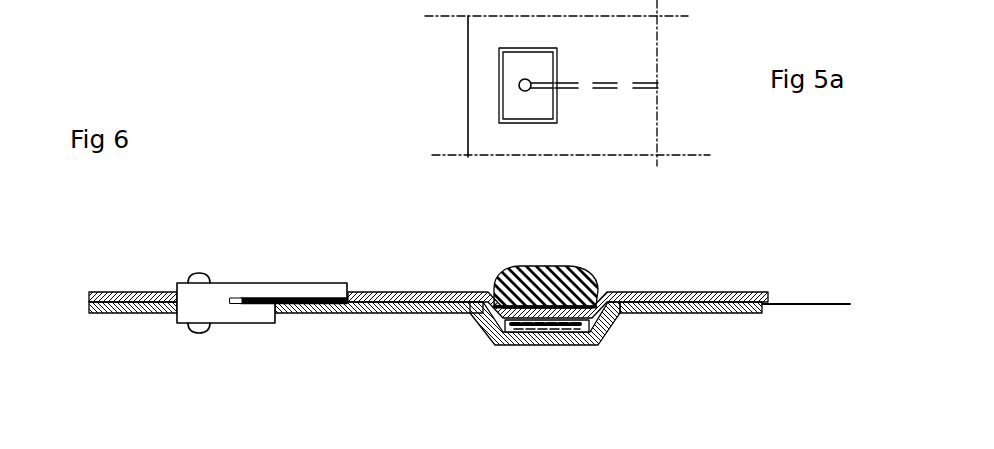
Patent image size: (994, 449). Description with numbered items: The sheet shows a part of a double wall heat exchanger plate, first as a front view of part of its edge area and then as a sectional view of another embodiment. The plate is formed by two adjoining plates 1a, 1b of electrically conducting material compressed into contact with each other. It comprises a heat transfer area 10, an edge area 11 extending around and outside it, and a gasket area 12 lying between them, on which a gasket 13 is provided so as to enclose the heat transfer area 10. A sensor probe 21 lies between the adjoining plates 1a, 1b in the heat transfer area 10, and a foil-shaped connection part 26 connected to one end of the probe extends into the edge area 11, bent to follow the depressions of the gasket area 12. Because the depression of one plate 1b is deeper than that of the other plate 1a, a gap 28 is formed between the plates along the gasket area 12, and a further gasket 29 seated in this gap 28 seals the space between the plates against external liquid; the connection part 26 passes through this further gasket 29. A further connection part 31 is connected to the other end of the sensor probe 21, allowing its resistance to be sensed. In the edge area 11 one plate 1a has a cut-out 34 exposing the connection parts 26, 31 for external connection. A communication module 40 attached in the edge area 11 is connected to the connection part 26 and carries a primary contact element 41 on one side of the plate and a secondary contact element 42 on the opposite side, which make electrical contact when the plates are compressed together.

In FIG. 6, the adjoining plate 1a is at (100, 292).
In FIG. 6, the adjoining plate 1b is at (108, 313).
In FIG. 5A, the heat transfer area 10 is at (480, 121).
In FIG. 6, the heat transfer area 10 is at (742, 293).
In FIG. 6, the edge area 11 is at (427, 297).
In FIG. 6, the gasket area 12 is at (607, 323).
In FIG. 6, the gasket 13 is at (550, 278).
In FIG. 6, the sensor probe 21 is at (818, 303).
In FIG. 5A, the connection part 26 is at (605, 83).
In FIG. 6, the connection part 26 is at (627, 295).
In FIG. 6, the gap 28 is at (583, 328).
In FIG. 6, the further gasket 29 is at (523, 332).
In FIG. 5A, the further connection part 31 is at (525, 91).
In FIG. 5A, the cut-out 34 is at (524, 65).
In FIG. 6, the cut-out 34 is at (347, 296).
In FIG. 6, the communication module 40 is at (257, 290).
In FIG. 6, the primary contact element 41 is at (198, 276).
In FIG. 6, the secondary contact element 42 is at (198, 332).